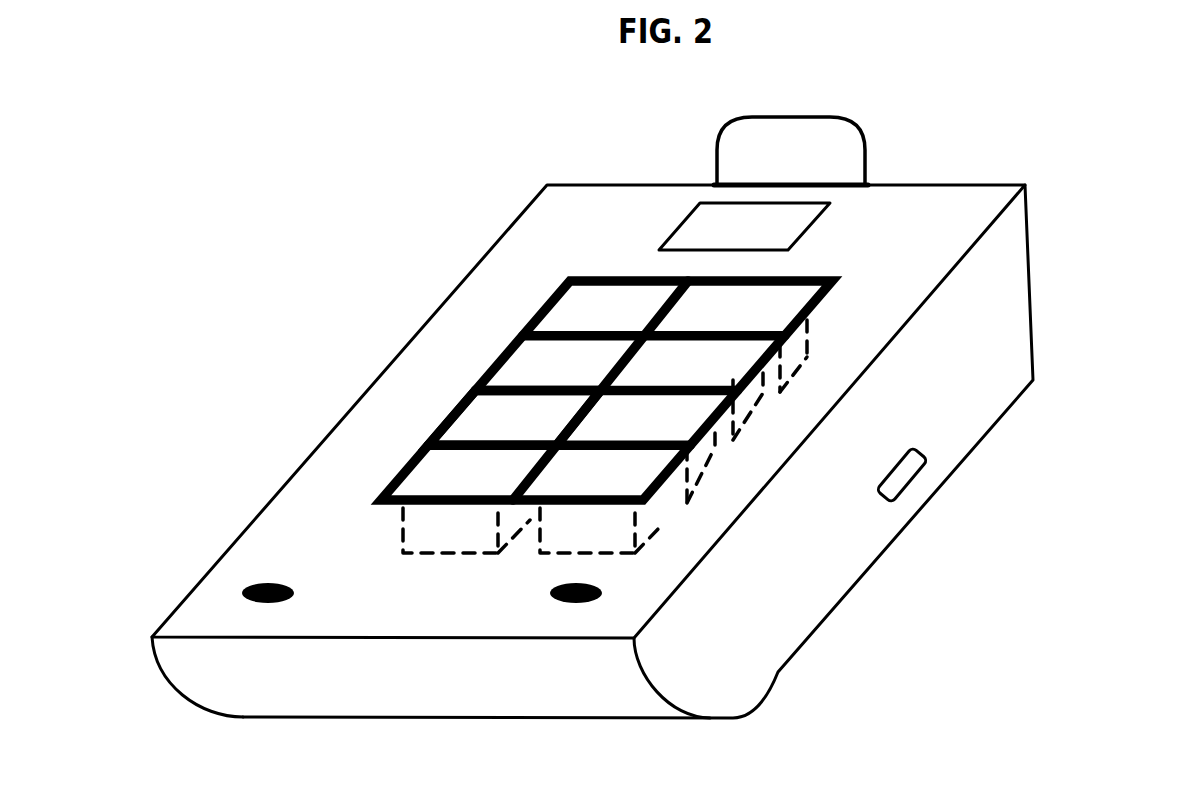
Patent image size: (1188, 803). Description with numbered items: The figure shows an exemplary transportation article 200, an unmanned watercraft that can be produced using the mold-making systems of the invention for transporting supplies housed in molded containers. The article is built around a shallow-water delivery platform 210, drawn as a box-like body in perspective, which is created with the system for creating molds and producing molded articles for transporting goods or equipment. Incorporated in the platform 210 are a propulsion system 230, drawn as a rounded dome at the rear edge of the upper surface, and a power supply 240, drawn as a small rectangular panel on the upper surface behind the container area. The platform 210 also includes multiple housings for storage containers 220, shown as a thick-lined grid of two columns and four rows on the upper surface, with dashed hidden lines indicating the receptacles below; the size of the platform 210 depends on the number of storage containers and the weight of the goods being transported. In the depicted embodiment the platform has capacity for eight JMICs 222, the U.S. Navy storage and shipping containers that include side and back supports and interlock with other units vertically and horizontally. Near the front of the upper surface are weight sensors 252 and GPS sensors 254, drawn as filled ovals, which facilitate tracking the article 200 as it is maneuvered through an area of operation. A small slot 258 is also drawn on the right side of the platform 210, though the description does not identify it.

The transportation article 200 is at (207, 83).
The shallow-water delivery platform 210 is at (955, 212).
The storage containers 220 is at (827, 305).
The JMICs 222 is at (520, 410).
The propulsion system 230 is at (828, 147).
The power supply 240 is at (720, 237).
The weight sensors 252 is at (263, 603).
The GPS sensors 254 is at (603, 590).
The connector port 258 is at (905, 472).